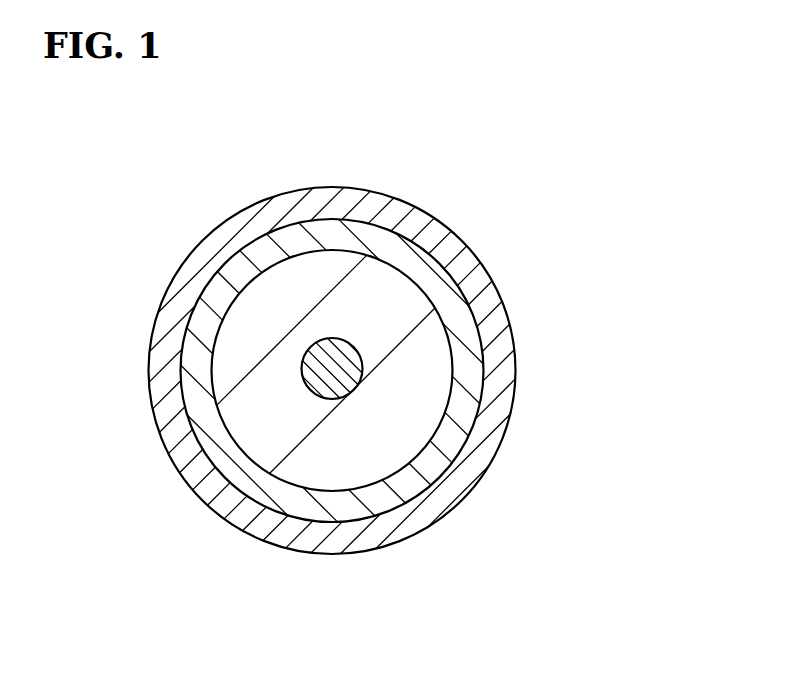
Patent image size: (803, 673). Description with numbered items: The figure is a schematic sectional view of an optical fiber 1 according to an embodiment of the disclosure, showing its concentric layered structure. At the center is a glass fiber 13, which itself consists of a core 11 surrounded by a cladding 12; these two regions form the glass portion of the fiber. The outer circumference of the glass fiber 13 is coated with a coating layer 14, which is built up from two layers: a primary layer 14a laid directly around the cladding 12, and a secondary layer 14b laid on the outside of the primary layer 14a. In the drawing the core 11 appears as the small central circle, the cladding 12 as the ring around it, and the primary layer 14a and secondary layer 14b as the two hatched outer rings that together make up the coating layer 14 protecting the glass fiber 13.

The optical fiber 1 is at (443, 413).
The core 11 is at (332, 357).
The cladding 12 is at (418, 385).
The glass fiber 13 is at (474, 370).
The coating layer 14 is at (443, 370).
The primary layer 14a is at (440, 453).
The secondary layer 14b is at (452, 492).